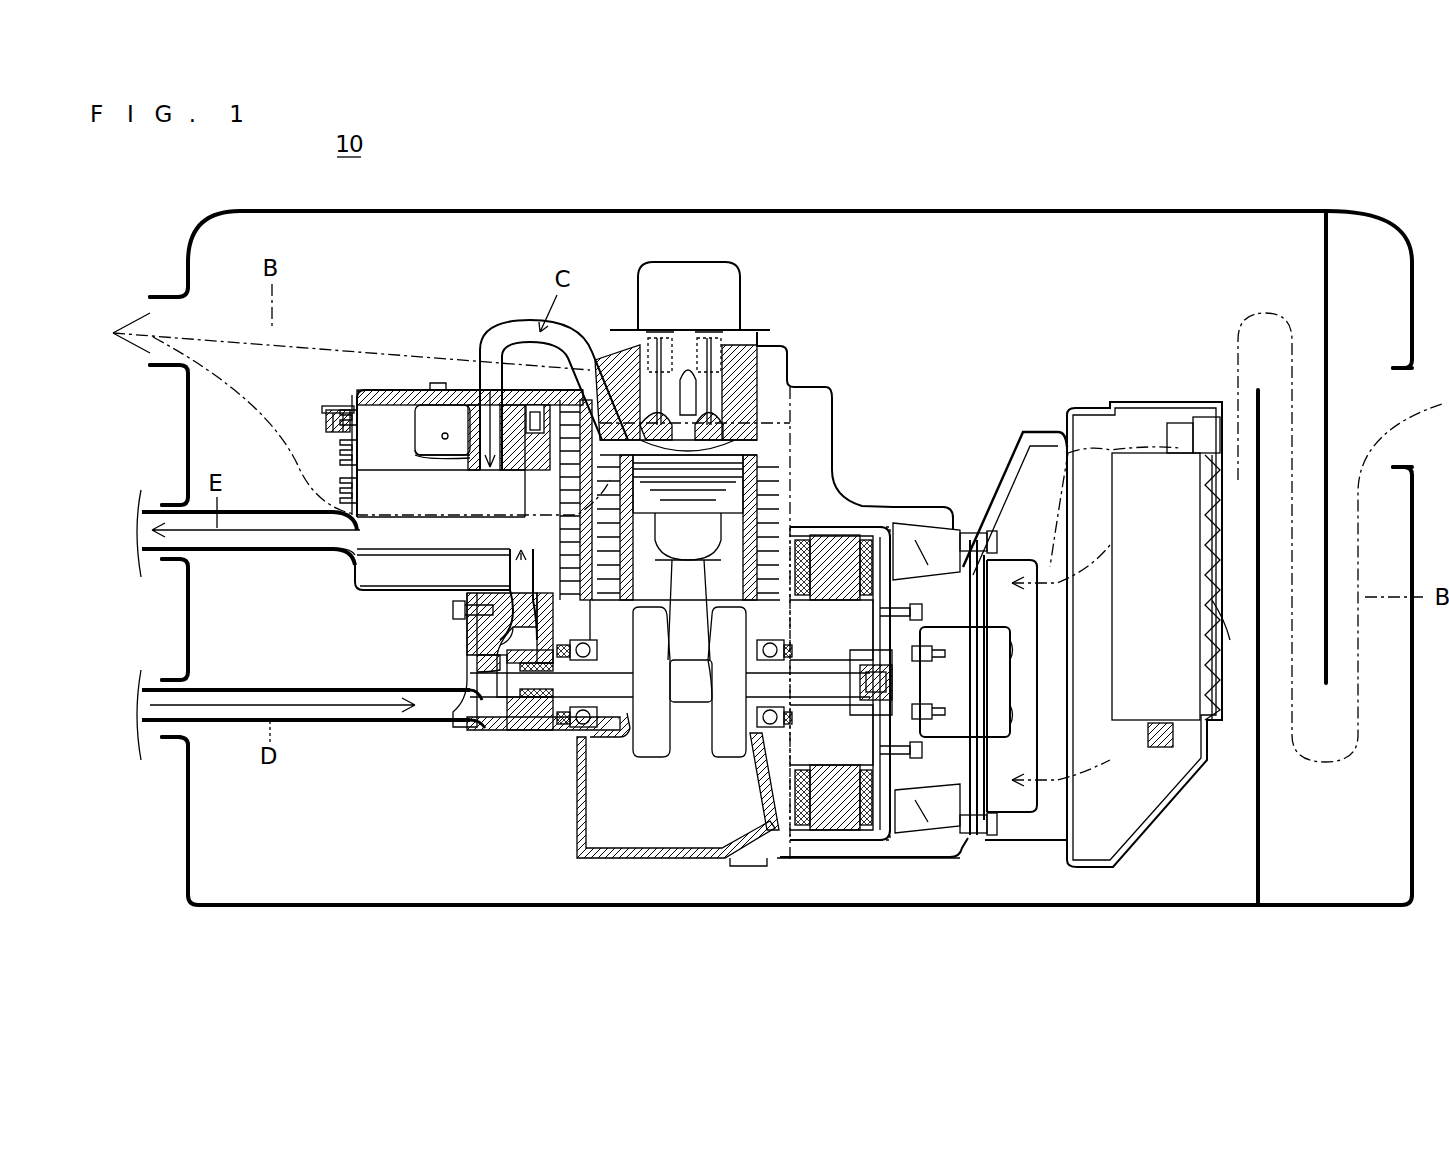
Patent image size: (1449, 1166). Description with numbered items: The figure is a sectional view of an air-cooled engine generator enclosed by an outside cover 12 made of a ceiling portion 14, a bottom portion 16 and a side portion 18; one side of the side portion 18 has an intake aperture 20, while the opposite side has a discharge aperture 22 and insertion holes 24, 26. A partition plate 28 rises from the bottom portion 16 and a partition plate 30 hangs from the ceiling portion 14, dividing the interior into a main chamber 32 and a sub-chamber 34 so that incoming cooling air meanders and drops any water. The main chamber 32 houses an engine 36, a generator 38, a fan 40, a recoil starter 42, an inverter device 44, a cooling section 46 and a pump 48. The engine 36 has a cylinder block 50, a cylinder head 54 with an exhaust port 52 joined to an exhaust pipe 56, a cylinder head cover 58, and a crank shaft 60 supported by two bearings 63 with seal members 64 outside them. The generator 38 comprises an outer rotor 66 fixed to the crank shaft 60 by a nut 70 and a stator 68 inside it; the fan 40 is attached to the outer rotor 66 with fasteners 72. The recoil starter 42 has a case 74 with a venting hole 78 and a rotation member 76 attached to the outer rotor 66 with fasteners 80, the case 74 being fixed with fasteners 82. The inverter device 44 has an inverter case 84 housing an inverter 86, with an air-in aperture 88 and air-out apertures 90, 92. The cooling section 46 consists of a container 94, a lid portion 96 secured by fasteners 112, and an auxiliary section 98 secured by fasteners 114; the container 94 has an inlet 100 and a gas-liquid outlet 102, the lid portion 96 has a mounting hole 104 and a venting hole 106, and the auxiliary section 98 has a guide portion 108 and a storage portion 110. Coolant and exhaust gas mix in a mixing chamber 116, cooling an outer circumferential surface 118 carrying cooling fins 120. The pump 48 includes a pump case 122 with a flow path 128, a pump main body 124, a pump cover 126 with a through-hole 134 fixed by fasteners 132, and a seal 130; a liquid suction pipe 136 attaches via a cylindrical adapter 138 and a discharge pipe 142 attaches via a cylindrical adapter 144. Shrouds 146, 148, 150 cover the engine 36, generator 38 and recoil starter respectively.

The outside cover 12 is at (759, 191).
The ceiling portion 14 is at (709, 209).
The bottom portion 16 is at (707, 907).
The side portion 18 is at (1412, 672).
The intake aperture 20 is at (1400, 370).
The discharge aperture 22 is at (148, 368).
The insertion hole 24 is at (162, 562).
The insertion hole 26 is at (164, 740).
The partition plate 28 is at (1261, 818).
The partition plate 30 is at (1324, 261).
The main chamber 32 is at (445, 907).
The sub-chamber 34 is at (1333, 907).
The engine 36 is at (795, 476).
The generator 38 is at (871, 520).
The fan 40 is at (940, 525).
The recoil starter 42 is at (1026, 842).
The inverter device 44 is at (1135, 398).
The cooling section 46 is at (340, 606).
The pump 48 is at (467, 648).
The cylinder block 50 is at (576, 822).
The exhaust port 52 is at (598, 378).
The cylinder head 54 is at (763, 388).
The exhaust pipe 56 is at (529, 320).
The cylinder head cover 58 is at (742, 272).
The crank shaft 60 is at (653, 762).
The bearing 63 is at (590, 735).
The seal member 64 is at (568, 728).
The outer rotor 66 is at (848, 520).
The stator 68 is at (845, 570).
The nut 70 is at (895, 683).
The fastener 72 is at (923, 614).
The case 74 is at (1010, 562).
The rotation member 76 is at (996, 628).
The venting hole 78 is at (1012, 668).
The fastener 80 is at (945, 655).
The fastener 82 is at (997, 535).
The inverter case 84 is at (1165, 405).
The inverter 86 is at (1110, 597).
The air-in aperture 88 is at (1213, 603).
The air-out aperture 90 is at (1066, 455).
The air-out aperture 92 is at (1030, 800).
The container 94 is at (362, 594).
The lid portion 96 is at (378, 376).
The auxiliary section 98 is at (416, 454).
The inlet 100 is at (520, 548).
The gas-liquid outlet 102 is at (352, 552).
The mounting hole 104 is at (488, 388).
The venting hole 106 is at (435, 388).
The guide portion 108 is at (470, 472).
The storage portion 110 is at (415, 421).
The fastener 112 is at (326, 402).
The fastener 114 is at (535, 433).
The mixing chamber 116 is at (423, 562).
The outer circumferential surface 118 is at (338, 489).
The cooling fin 120 is at (338, 470).
The pump case 122 is at (522, 732).
The pump main body 124 is at (494, 732).
The pump cover 126 is at (465, 672).
The flow path 128 is at (465, 635).
The seal 130 is at (540, 732).
The fastener 132 is at (453, 612).
The through-hole 134 is at (478, 730).
The liquid suction pipe 136 is at (348, 722).
The cylindrical adapter 138 is at (428, 720).
The discharge pipe 142 is at (232, 552).
The cylindrical adapter 144 is at (312, 549).
The shroud 146 is at (773, 352).
The shroud 148 is at (834, 416).
The shroud 150 is at (1000, 485).